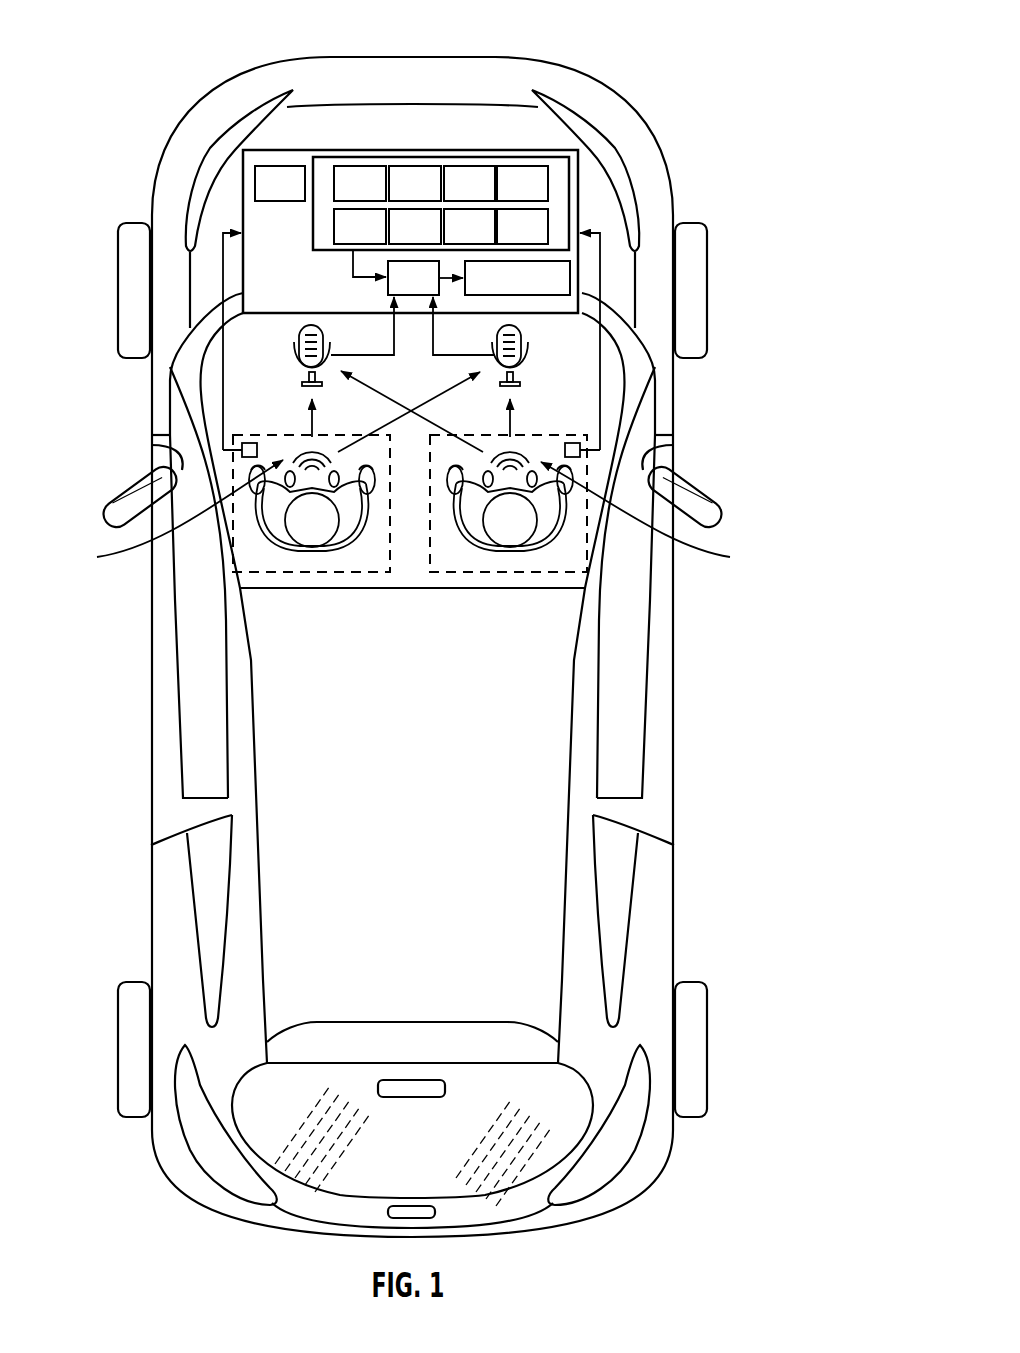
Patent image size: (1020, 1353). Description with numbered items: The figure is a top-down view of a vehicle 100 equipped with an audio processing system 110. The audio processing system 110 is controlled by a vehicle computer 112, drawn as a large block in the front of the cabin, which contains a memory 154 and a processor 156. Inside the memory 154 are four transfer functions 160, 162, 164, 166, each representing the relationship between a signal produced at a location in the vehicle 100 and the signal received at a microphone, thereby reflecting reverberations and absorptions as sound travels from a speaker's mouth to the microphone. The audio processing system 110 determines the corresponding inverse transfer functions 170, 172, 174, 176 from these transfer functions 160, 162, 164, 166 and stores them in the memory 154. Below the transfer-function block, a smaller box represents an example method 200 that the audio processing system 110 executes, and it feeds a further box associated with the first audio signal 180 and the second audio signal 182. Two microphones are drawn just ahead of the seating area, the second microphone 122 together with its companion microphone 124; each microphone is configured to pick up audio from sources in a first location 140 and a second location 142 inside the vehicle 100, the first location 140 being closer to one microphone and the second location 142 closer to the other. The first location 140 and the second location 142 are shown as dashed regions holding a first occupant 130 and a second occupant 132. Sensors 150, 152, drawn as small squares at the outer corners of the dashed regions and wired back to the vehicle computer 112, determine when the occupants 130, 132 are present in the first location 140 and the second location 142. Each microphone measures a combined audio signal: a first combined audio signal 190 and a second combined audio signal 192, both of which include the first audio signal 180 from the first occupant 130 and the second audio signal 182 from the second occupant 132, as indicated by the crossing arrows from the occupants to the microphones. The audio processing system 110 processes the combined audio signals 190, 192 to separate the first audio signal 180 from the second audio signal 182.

The vehicle 100 is at (656, 37).
The audio processing system 110 is at (551, 131).
The vehicle computer 112 is at (310, 150).
The memory 154 is at (382, 157).
The processor 156 is at (261, 197).
The transfer function 160 is at (341, 197).
The transfer function 162 is at (396, 197).
The transfer function 164 is at (450, 197).
The transfer function 166 is at (542, 197).
The inverse transfer function 170 is at (341, 240).
The inverse transfer function 172 is at (396, 240).
The inverse transfer function 174 is at (450, 240).
The inverse transfer function 176 is at (542, 240).
The example method 200 is at (394, 292).
The second microphone 122 is at (296, 352).
The second microphone 124 is at (526, 352).
The first combined audio signal 190 is at (356, 354).
The second combined audio signal 192 is at (432, 322).
The sensor 150 is at (249, 443).
The sensor 152 is at (572, 443).
The first occupant 130 is at (310, 556).
The second occupant 132 is at (513, 556).
The first location 140 is at (343, 573).
The second location 142 is at (467, 573).
The first audio signal 180 is at (718, 203).
The second audio signal 182 is at (655, 517).